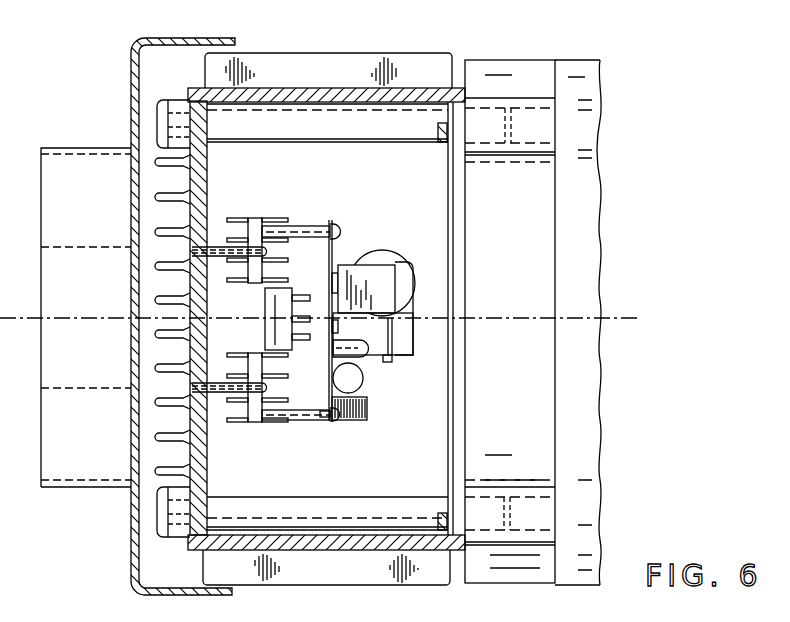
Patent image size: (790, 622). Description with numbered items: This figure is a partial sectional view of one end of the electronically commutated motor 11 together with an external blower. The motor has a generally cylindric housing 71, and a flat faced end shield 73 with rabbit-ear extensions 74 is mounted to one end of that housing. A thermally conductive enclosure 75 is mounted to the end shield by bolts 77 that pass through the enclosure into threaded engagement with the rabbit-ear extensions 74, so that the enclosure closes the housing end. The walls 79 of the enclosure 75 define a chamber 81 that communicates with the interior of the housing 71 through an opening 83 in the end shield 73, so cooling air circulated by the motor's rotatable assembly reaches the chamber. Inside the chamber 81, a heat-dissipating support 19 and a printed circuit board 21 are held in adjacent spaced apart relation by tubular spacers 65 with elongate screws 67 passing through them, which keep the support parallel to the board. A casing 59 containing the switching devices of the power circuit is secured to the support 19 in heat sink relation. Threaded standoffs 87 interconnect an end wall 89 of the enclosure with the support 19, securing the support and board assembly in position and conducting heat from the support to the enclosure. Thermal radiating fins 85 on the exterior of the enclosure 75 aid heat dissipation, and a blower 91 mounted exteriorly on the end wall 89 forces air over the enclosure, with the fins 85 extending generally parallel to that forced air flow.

The electronically commutated motor 11 is at (605, 198).
The support 19 is at (265, 421).
The printed circuit board 21 is at (328, 414).
The casing 59 is at (290, 300).
The spacers 65 is at (300, 226).
The screws 67 is at (334, 232).
The housing 71 is at (590, 58).
The flat faced end shield 73 is at (512, 70).
The rabbit-ear extensions 74 is at (548, 130).
The enclosure 75 is at (382, 53).
The bolts 77 is at (172, 100).
The walls 79 is at (285, 82).
The chamber 81 is at (432, 188).
The opening 83 is at (524, 478).
The thermal radiating fins 85 is at (143, 38).
The standoffs 87 is at (212, 245).
The end wall 89 is at (207, 178).
The blower means 91 is at (41, 148).